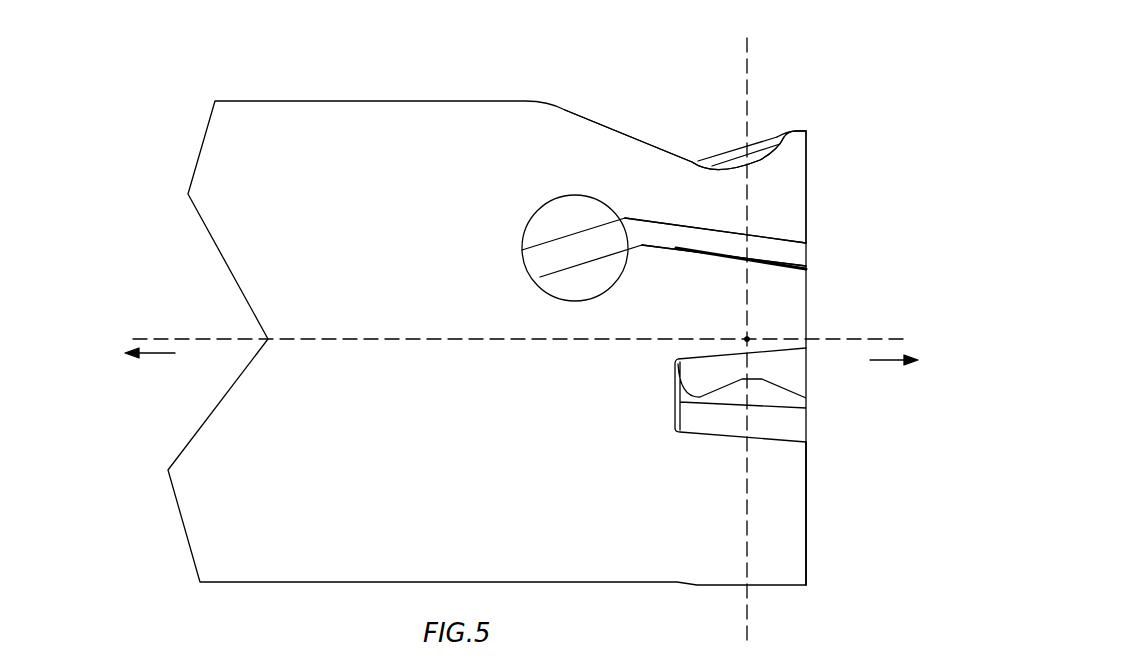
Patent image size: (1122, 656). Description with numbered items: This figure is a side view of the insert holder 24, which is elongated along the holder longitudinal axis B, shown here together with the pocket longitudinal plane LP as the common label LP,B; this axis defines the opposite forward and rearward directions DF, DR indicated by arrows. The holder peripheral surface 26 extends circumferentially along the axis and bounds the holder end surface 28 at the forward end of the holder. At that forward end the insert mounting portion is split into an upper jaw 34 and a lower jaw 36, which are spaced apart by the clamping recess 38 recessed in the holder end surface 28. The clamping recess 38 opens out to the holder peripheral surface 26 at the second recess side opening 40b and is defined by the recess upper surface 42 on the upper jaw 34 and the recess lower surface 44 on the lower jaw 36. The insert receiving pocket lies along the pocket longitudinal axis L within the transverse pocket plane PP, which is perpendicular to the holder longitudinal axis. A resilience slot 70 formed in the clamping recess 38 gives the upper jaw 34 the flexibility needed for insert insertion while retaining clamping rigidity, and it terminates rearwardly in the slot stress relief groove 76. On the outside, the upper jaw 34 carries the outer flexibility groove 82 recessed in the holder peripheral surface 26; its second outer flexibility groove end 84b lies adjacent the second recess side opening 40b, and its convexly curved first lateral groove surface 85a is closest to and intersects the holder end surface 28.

The insert holder 24 is at (440, 310).
The holder peripheral surface 26 is at (362, 130).
The holder end surface 28 is at (807, 525).
The upper jaw 34 is at (822, 188).
The lower jaw 36 is at (827, 482).
The clamping recess 38 is at (620, 235).
The second recess side opening 40b is at (660, 248).
The recess upper surface 42 is at (716, 250).
The recess lower surface 44 is at (697, 235).
The resilience slot 70 is at (785, 255).
The slot stress relief groove 76 is at (579, 285).
The outer flexibility groove 82 is at (672, 135).
The second outer flexibility groove end 84b is at (765, 133).
The first lateral groove surface 85a is at (730, 157).
The transverse pocket plane PP is at (748, 67).
The pocket longitudinal plane and holder longitudinal axis LP,B is at (176, 330).
The pocket longitudinal axis L is at (748, 341).
The rearward direction DR is at (155, 376).
The forward direction DF is at (894, 381).